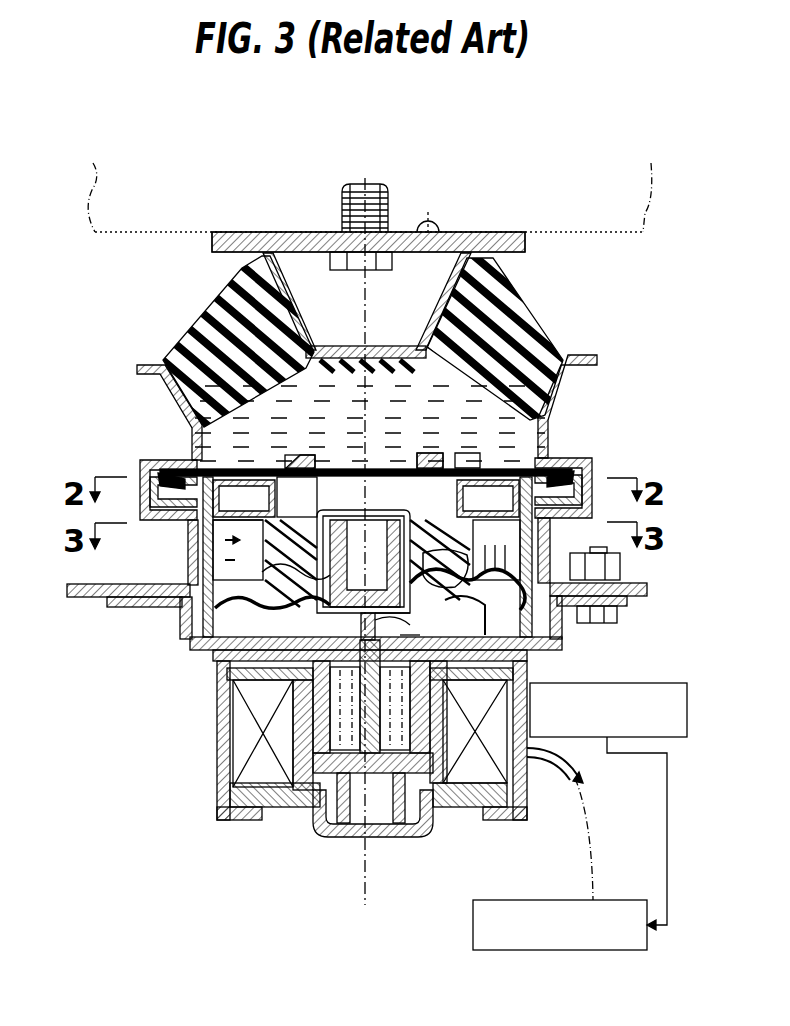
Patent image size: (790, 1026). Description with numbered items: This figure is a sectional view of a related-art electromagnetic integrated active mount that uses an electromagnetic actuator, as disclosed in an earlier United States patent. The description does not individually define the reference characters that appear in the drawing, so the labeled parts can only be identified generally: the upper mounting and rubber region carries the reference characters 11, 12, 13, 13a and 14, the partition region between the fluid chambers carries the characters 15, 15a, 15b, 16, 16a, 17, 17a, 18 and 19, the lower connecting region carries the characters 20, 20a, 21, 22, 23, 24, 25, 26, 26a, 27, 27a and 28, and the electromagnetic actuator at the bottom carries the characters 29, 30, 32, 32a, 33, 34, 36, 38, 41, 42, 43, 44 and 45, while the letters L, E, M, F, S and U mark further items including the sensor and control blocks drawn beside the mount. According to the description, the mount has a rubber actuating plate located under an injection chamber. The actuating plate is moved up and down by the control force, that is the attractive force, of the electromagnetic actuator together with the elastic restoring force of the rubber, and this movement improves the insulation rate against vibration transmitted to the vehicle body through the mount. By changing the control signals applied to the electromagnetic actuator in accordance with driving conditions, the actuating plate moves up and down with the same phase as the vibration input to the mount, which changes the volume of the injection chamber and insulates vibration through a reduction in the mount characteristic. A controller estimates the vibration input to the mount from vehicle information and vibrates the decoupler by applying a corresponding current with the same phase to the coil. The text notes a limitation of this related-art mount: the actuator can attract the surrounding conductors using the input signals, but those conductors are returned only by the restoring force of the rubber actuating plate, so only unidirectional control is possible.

The engine mounting plate 11 is at (500, 232).
The inner mounting member 12 is at (292, 298).
The housing 13 is at (166, 400).
The housing flange clamp 13a is at (143, 470).
The elastic rubber body 14 is at (210, 318).
The partition member 15 is at (303, 466).
The partition upper plate 15a is at (487, 468).
The partition orifice wall 15b is at (353, 440).
The first orifice passage 16 is at (235, 512).
The second orifice chamber 16a is at (488, 498).
The orifice chamber 17 is at (233, 497).
The auxiliary orifice chamber 17a is at (496, 550).
The partition center wall 18 is at (335, 497).
The movable plate 19 is at (440, 497).
The actuator rod 20 is at (330, 614).
The rod connecting portion 20a is at (362, 613).
The crimped flange 21 is at (152, 488).
The lower diaphragm 22 is at (300, 604).
The elastic partition membrane 23 is at (296, 563).
The main fluid chamber 24 is at (370, 423).
The auxiliary fluid chamber 25 is at (467, 565).
The orifice passage 26 is at (234, 486).
The orifice opening 26a is at (462, 470).
The mounting bracket 27 is at (205, 543).
The mounting bracket right leg 27a is at (533, 555).
The vehicle body frame plate 28 is at (130, 586).
The actuator 29 is at (185, 721).
The actuator housing 30 is at (225, 697).
The bobbin 32 is at (353, 838).
The coil winding 32a is at (475, 731).
The yoke bottom plate 33 is at (233, 768).
The core 34 is at (240, 742).
The plate spring 36 is at (392, 643).
The seal ring 38 is at (463, 644).
The retainer 41 is at (408, 647).
The cover plate 42 is at (218, 668).
The coil 43 is at (263, 733).
The plunger 44 is at (380, 775).
The bottom cup 45 is at (425, 818).
The bolt L is at (380, 274).
The engine E is at (574, 232).
The engine mount M is at (600, 402).
The fixing bolt F is at (652, 660).
The crank pulse sensor S is at (624, 683).
The electronic control unit U is at (623, 900).